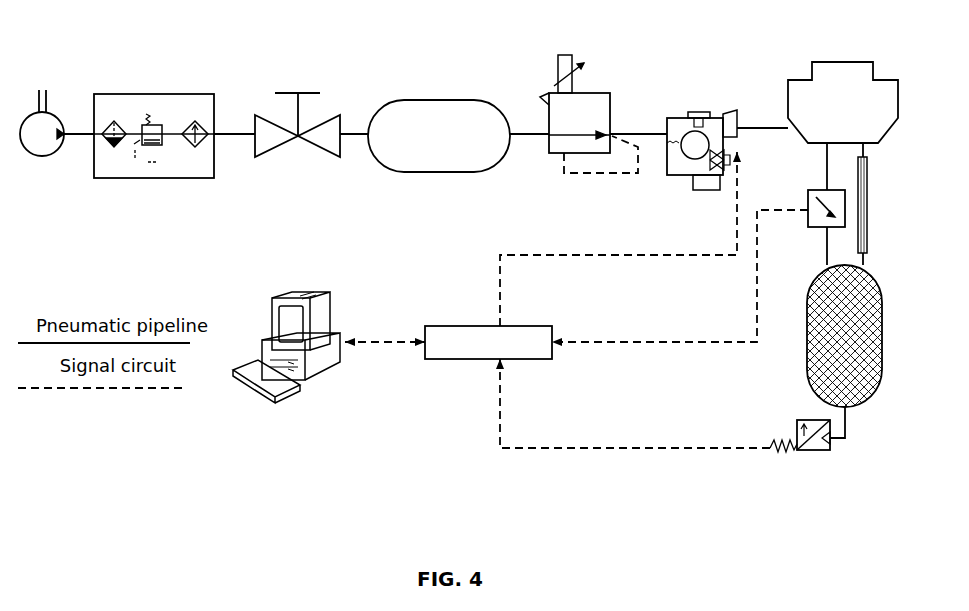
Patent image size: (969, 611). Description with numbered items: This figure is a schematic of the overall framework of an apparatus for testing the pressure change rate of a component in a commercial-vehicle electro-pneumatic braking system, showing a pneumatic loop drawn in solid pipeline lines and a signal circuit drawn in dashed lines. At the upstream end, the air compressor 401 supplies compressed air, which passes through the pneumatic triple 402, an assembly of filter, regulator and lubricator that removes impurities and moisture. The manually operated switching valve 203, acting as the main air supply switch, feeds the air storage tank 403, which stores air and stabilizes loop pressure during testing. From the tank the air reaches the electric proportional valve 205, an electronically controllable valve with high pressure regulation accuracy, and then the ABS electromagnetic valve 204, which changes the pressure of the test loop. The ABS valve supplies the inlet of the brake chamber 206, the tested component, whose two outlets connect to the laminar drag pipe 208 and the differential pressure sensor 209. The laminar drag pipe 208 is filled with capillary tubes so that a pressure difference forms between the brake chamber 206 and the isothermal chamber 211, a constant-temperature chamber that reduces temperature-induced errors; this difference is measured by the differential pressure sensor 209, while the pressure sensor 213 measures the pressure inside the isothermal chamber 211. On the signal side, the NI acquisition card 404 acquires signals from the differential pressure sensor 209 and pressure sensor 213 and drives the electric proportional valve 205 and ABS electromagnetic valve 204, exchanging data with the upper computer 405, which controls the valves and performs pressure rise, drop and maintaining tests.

The air compressor 401 is at (42, 148).
The pneumatic triple 402 is at (154, 150).
The manually operated switching valve 203 is at (297, 149).
The air storage tank 403 is at (439, 153).
The electric proportional valve 205 is at (575, 130).
The ABS electromagnetic valve 204 is at (698, 157).
The brake chamber 206 is at (861, 102).
The laminar drag pipe 208 is at (887, 205).
The differential pressure sensor 209 is at (818, 220).
The isothermal chamber 211 is at (863, 336).
The pressure sensor 213 is at (800, 451).
The NI acquisition card 404 is at (488, 360).
The upper computer 405 is at (286, 365).